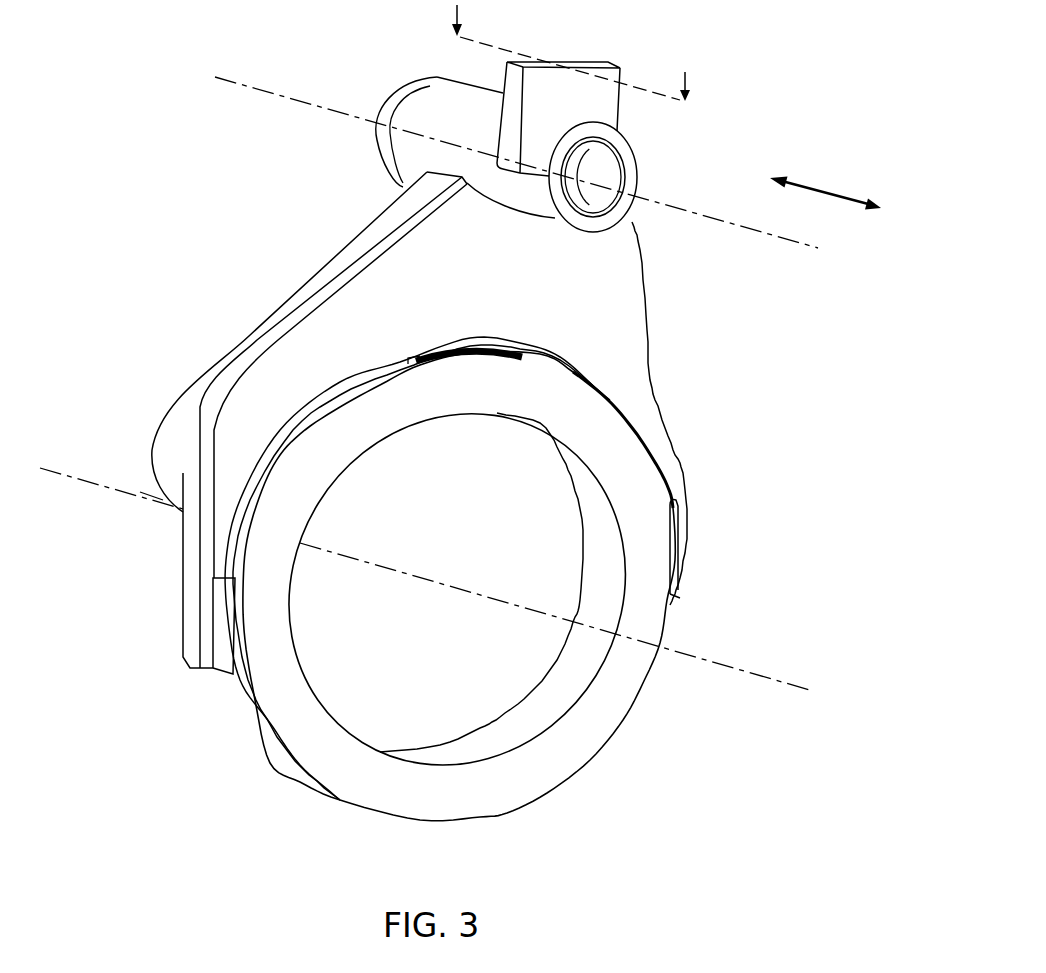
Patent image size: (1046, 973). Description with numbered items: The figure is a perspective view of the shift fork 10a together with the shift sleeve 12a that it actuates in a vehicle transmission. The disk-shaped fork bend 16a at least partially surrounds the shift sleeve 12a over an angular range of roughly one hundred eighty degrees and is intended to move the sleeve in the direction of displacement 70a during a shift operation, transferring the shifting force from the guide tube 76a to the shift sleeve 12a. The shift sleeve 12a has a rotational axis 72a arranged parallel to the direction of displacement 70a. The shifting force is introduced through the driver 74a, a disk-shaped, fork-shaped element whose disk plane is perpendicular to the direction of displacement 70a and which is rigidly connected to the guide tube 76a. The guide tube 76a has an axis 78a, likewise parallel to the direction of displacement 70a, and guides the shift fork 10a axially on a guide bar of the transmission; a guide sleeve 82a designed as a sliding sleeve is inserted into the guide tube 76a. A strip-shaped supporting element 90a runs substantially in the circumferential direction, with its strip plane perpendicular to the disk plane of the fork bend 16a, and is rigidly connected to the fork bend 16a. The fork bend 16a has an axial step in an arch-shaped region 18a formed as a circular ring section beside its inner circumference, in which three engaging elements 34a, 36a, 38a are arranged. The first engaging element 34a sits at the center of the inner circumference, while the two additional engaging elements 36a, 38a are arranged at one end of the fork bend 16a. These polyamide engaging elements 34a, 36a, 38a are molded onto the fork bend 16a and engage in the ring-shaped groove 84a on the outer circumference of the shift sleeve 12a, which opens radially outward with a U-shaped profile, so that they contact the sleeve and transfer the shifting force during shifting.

The shift fork 10a is at (207, 191).
The shift sleeve 12a is at (645, 517).
The fork bend 16a is at (625, 318).
The region 18a is at (632, 393).
The first engaging element 34a is at (442, 352).
The engaging element 36a is at (231, 668).
The engaging element 38a is at (674, 598).
The direction of displacement 70a is at (828, 183).
The rotational axis 72a is at (758, 673).
The driver 74a is at (605, 113).
The guide tube 76a is at (615, 147).
The axis 78a is at (760, 232).
The guide sleeve 82a is at (625, 176).
The groove 84a is at (252, 768).
The supporting element 90a is at (232, 357).